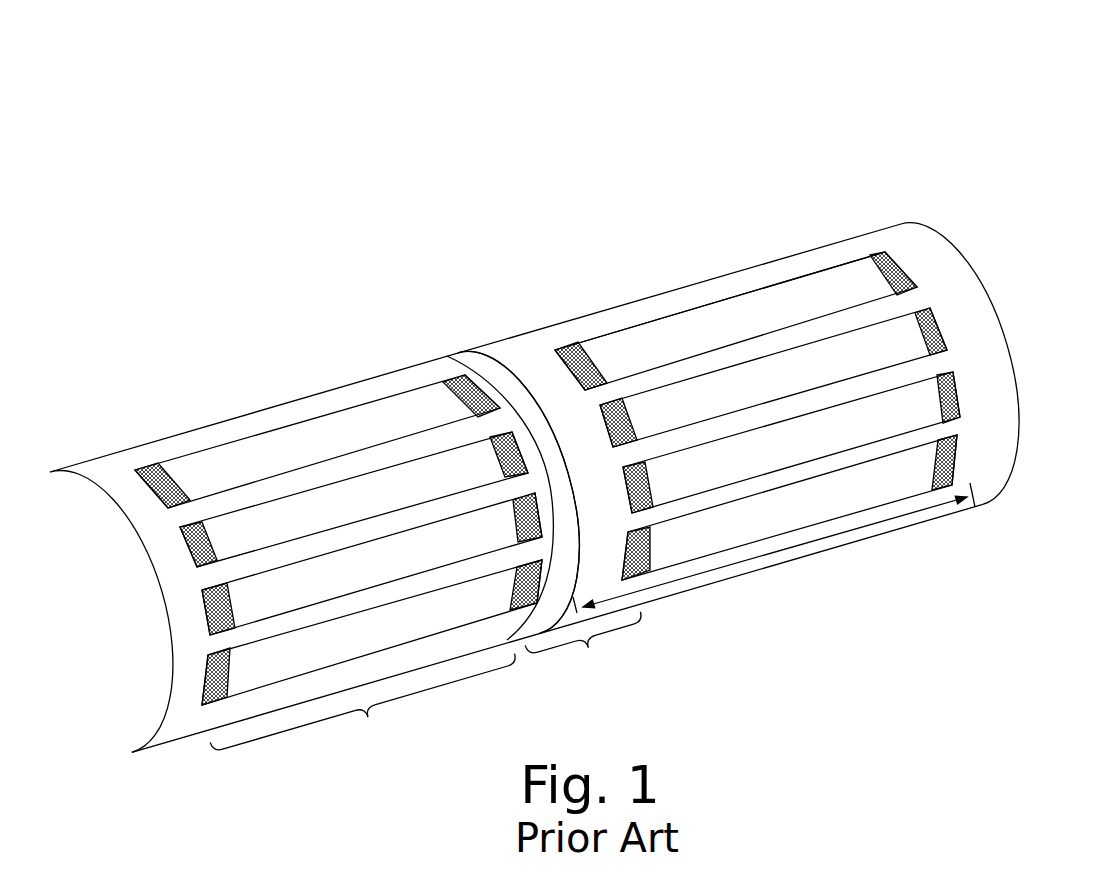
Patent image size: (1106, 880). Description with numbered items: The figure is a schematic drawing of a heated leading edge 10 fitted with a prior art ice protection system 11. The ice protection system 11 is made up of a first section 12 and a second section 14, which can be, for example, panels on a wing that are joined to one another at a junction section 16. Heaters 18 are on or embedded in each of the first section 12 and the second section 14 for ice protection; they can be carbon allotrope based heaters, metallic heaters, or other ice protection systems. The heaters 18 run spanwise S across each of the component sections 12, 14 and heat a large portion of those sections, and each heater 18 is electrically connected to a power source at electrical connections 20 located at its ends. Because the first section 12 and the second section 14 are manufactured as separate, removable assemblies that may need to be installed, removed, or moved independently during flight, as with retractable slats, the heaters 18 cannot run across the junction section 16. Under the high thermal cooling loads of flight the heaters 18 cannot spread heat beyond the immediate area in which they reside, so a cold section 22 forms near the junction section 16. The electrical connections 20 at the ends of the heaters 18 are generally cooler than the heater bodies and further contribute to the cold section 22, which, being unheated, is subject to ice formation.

The heated leading edge 10 is at (1000, 133).
The ice protection system 11 is at (362, 702).
The first section 12 is at (210, 425).
The second section 14 is at (737, 268).
The junction section 16 is at (468, 346).
The heaters 18 is at (547, 478).
The electrical connections 20 is at (213, 667).
The cold section 22 is at (583, 647).
The spanwise direction S is at (770, 555).